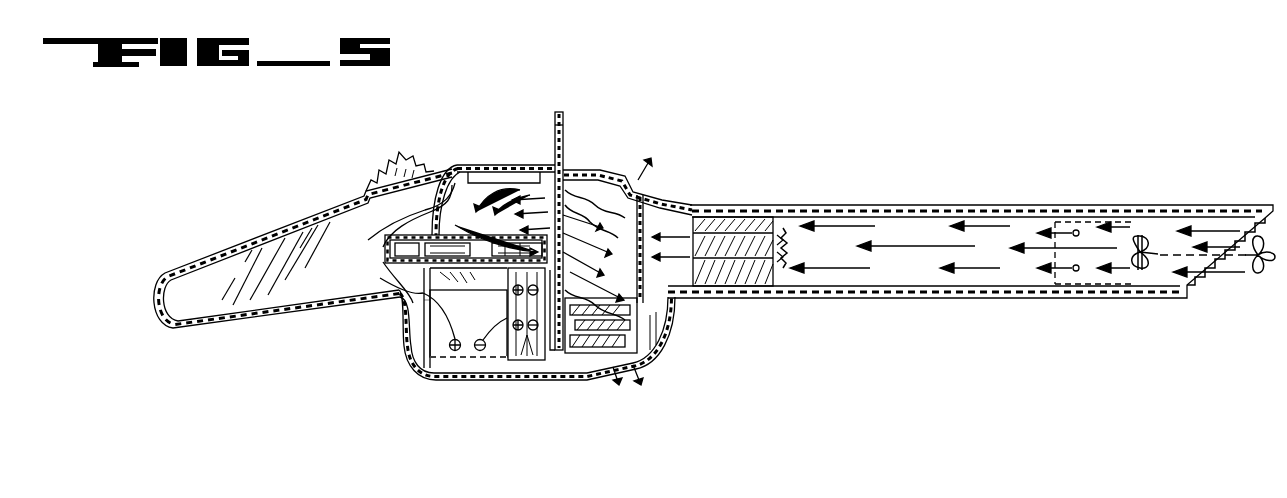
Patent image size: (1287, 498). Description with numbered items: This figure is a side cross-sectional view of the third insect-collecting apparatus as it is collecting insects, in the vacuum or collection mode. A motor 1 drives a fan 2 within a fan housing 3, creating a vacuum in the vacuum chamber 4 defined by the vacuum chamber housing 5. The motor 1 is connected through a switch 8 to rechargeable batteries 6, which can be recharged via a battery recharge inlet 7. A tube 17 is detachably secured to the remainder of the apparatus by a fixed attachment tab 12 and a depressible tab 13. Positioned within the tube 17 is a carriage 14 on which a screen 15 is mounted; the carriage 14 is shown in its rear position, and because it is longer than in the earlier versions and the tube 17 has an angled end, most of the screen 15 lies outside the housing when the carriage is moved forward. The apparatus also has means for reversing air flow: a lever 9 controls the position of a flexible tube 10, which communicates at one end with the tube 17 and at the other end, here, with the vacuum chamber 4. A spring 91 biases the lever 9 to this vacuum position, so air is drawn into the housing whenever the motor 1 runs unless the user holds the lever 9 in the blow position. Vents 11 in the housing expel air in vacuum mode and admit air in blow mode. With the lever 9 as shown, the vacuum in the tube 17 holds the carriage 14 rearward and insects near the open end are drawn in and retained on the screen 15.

The motor 1 is at (463, 321).
The fan 2 is at (410, 270).
The fan housing 3 is at (383, 250).
The vacuum chamber 4 is at (492, 205).
The vacuum chamber housing 5 is at (478, 168).
The rechargeable batteries 6 is at (497, 370).
The battery recharge inlet 7 is at (525, 372).
The switch 8 is at (385, 178).
The lever 9 is at (565, 130).
The spring 91 is at (555, 126).
The flexible tube 10 is at (627, 183).
The vents 11 is at (650, 345).
The fixed attachment tab 12 is at (601, 374).
The depressible tab 13 is at (607, 173).
The carriage 14 is at (730, 270).
The screen 15 is at (784, 280).
The tube 17 is at (983, 298).